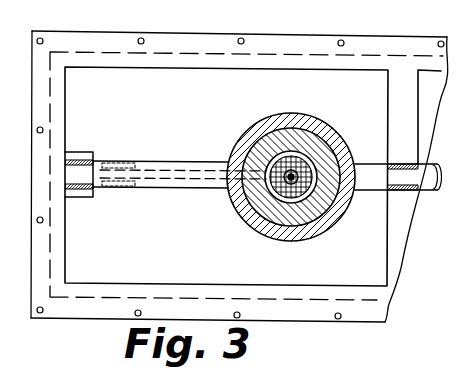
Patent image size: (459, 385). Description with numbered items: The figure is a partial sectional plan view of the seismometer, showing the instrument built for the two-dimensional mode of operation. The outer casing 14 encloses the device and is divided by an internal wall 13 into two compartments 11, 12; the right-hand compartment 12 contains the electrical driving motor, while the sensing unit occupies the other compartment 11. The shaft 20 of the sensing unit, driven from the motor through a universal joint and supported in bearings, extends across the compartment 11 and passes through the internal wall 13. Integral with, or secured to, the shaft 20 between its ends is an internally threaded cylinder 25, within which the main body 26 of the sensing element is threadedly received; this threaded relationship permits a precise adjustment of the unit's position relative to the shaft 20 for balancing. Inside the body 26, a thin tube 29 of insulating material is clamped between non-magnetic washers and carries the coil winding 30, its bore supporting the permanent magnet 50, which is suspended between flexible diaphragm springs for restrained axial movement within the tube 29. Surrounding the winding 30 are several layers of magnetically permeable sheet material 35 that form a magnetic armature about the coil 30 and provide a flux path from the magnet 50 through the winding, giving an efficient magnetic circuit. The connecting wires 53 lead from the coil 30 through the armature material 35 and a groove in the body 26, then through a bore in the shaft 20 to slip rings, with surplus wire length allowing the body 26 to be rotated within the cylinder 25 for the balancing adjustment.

The compartment 11 is at (118, 90).
The compartment 12 is at (428, 83).
The internal wall 13 is at (412, 124).
The outer casing 14 is at (303, 20).
The shaft 20 is at (172, 187).
The internally threaded cylinder 25 is at (250, 146).
The main body 26 is at (283, 132).
The insulating tube 29 is at (284, 200).
The coil winding 30 is at (313, 150).
The magnetically permeable sheet material 35 is at (318, 168).
The permanent magnet 50 is at (325, 216).
The connecting wires 53 is at (192, 168).